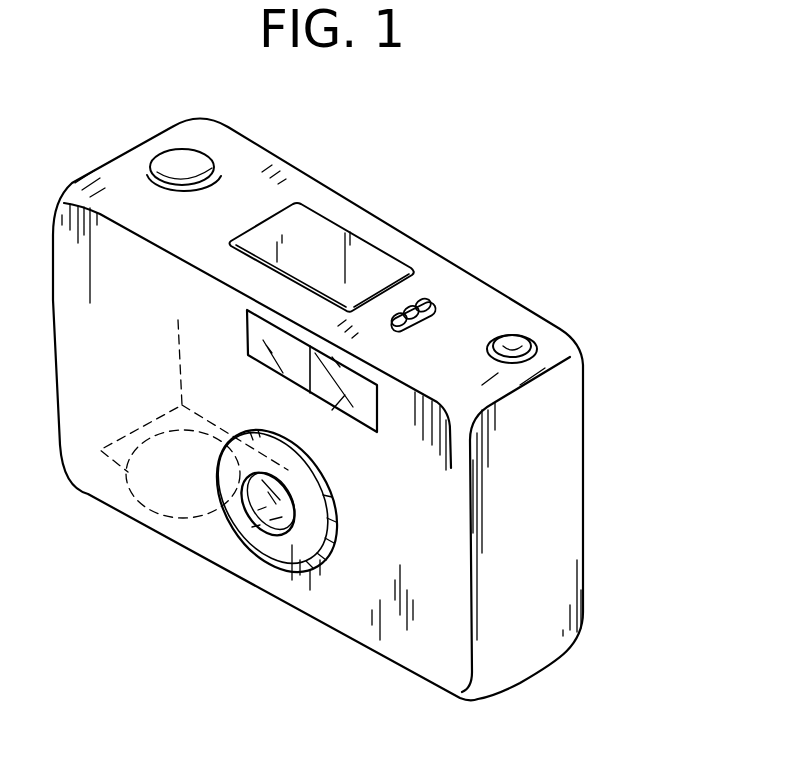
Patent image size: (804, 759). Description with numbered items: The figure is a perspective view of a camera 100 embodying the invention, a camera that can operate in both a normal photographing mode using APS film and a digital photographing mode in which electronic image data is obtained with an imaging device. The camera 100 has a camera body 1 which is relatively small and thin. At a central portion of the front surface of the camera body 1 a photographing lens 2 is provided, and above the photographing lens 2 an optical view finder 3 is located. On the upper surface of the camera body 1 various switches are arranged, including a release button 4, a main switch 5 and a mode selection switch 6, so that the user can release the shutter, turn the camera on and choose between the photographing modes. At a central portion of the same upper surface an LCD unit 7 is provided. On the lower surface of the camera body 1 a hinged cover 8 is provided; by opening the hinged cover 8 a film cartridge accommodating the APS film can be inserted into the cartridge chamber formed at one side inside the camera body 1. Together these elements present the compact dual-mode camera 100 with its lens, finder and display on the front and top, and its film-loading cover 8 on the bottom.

The camera 100 is at (634, 268).
The camera body 1 is at (395, 625).
The photographing lens 2 is at (262, 530).
The view finder 3 is at (335, 405).
The release button 4 is at (172, 160).
The main switch 5 is at (517, 340).
The mode selection switch 6 is at (417, 300).
The LCD unit 7 is at (333, 233).
The hinged cover 8 is at (103, 498).